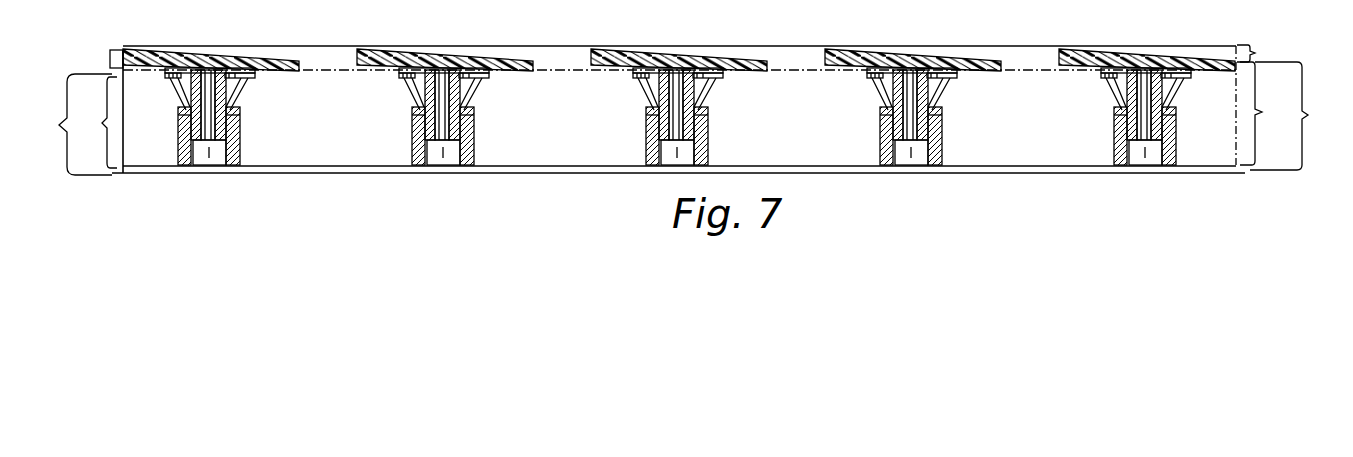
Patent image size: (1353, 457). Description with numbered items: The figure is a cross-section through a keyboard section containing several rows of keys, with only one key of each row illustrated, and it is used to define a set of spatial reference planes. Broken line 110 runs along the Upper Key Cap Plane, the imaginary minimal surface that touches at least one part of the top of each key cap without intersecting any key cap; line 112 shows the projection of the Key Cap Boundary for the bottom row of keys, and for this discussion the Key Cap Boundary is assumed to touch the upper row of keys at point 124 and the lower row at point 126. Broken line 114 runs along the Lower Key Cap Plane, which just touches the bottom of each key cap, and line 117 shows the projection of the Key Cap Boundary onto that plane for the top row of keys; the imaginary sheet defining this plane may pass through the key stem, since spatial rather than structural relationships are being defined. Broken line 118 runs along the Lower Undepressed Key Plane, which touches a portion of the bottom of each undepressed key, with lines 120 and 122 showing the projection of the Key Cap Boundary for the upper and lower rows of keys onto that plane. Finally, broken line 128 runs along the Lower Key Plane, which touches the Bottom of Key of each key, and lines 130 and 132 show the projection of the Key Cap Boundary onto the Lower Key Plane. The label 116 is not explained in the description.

The Upper Key Cap Plane line 110 is at (320, 45).
The Key Cap Boundary projection for bottom row 112 is at (1255, 53).
The Lower Key Cap Plane line 114 is at (327, 72).
The top plate segment 116 is at (110, 55).
The Key Cap Boundary projection for top row 117 is at (113, 69).
The Lower Undepressed Key Plane line 118 is at (368, 166).
The Key Cap Boundary projection for upper row 120 is at (92, 122).
The Key Cap Boundary projection for lower row 122 is at (1271, 113).
The upper row contact point 124 is at (122, 71).
The lower row contact point 126 is at (1237, 62).
The Lower Key Plane line 128 is at (390, 174).
The Key Cap Boundary projection onto Lower Key Plane 130 is at (59, 125).
The Key Cap Boundary projection onto Lower Key Plane 132 is at (1299, 116).